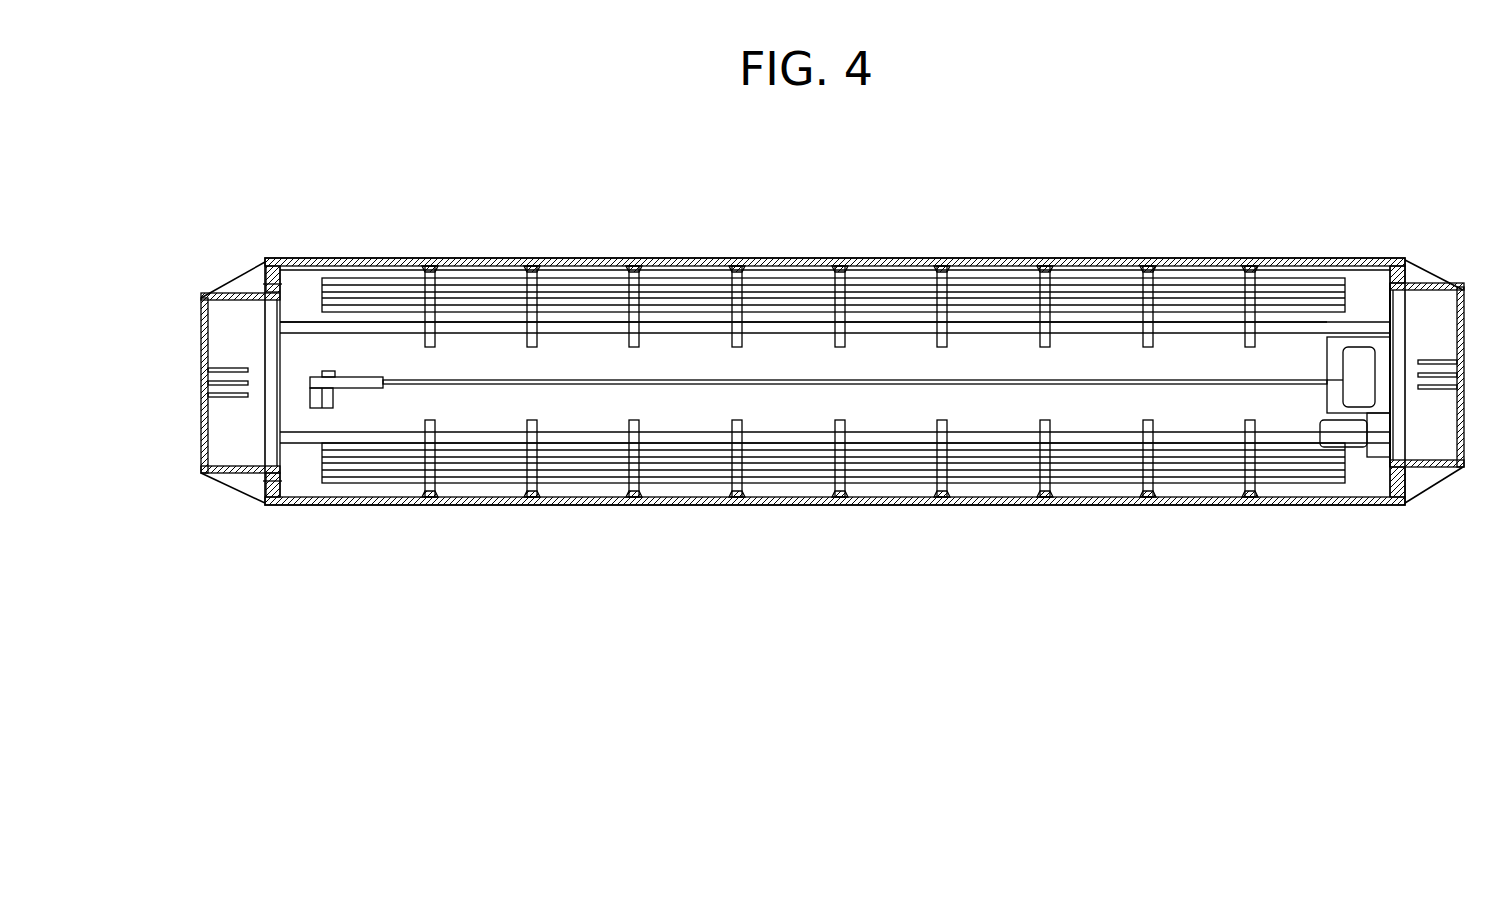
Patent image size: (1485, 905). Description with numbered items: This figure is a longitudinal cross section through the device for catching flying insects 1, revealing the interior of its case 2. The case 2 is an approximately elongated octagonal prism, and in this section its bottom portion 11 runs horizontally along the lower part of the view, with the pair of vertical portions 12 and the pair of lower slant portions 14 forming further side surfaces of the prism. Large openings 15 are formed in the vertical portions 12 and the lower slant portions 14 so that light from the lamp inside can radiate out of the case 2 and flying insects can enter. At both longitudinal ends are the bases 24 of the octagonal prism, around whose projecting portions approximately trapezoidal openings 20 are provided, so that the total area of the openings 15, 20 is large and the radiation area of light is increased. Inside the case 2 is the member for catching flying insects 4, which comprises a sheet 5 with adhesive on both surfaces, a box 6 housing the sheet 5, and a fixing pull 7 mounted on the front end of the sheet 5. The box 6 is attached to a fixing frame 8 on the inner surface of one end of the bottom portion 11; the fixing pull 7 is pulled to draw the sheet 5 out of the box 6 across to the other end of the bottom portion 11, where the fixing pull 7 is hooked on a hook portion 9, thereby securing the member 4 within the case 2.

The device for catching flying insects 1 is at (1268, 247).
The case 2 is at (304, 262).
The member for catching flying insects 4 is at (1362, 355).
The sheet for catching insects 5 is at (470, 380).
The box 6 is at (1352, 450).
The fixing pull 7 is at (365, 378).
The fixing frame 8 is at (1420, 283).
The hook portion 9 is at (306, 410).
The bottom portion 11 is at (1088, 350).
The vertical portions 12 is at (970, 268).
The lower slant portions 14 is at (592, 275).
The openings 15 is at (790, 266).
The trapezoidal openings 20 is at (264, 267).
The bases 24 is at (218, 272).